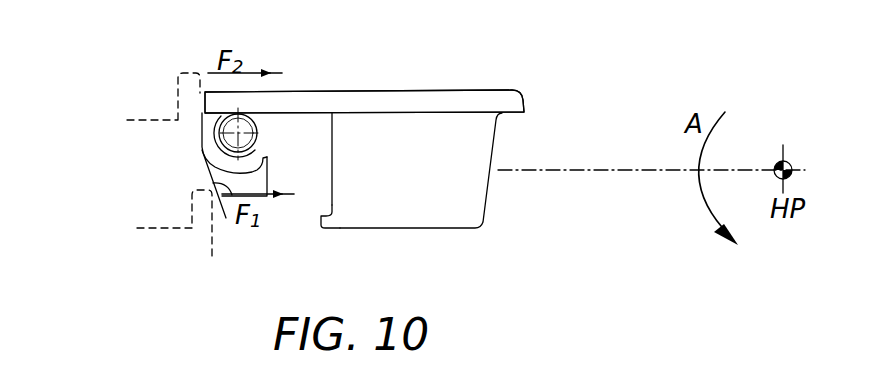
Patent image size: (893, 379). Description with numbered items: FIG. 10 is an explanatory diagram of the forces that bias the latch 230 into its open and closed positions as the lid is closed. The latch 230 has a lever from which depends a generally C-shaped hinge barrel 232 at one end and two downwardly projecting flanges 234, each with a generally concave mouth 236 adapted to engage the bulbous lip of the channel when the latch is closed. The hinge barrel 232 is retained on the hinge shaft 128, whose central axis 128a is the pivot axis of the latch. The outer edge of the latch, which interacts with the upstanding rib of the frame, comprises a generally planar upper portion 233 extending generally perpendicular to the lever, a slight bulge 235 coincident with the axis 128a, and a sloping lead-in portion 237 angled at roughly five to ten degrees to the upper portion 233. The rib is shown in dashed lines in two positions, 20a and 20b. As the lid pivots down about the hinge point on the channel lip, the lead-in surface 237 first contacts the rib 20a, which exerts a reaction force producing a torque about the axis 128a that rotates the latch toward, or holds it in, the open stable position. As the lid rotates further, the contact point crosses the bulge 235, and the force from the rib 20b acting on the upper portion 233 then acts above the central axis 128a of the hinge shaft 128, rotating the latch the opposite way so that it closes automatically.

The latch variant 230 is at (543, 97).
The upper portion 233 is at (203, 100).
The downwardly projecting flange 234 is at (453, 212).
The concave mouth 236 is at (322, 205).
The bulge 235 is at (200, 140).
The hinge barrel 232 is at (200, 152).
The lead-in portion 237 is at (226, 218).
The hinge shaft 128 is at (250, 122).
The central axis 128a is at (238, 135).
The upstanding rib (position b) 20b is at (186, 83).
The upstanding rib (position a) 20a is at (190, 202).